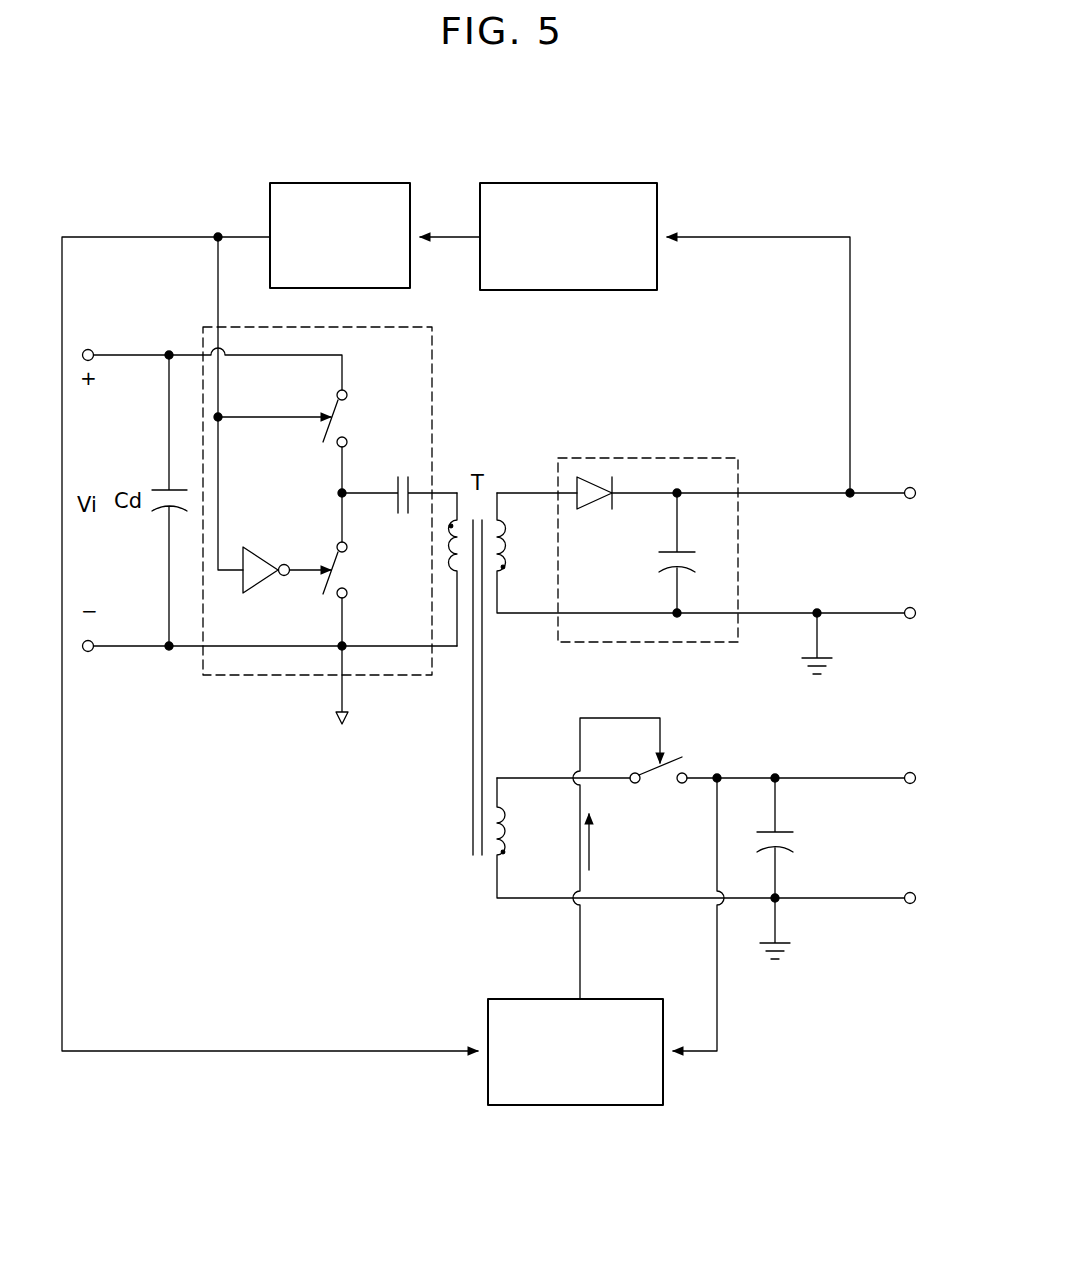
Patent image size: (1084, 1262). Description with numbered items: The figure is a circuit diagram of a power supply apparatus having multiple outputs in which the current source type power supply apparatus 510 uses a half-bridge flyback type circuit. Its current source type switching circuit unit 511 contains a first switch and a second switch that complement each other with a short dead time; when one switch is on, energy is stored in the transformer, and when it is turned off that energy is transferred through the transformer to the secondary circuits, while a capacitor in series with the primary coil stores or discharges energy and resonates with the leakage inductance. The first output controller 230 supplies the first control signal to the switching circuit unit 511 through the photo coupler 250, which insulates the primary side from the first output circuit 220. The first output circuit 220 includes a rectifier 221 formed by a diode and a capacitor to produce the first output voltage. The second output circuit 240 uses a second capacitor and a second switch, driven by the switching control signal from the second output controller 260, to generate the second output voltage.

The photo coupler 250 is at (347, 182).
The first output controller 230 is at (573, 183).
The current source type power supply apparatus 510 is at (188, 343).
The current source type switching circuit unit 511 is at (243, 675).
The first output circuit 220 is at (522, 445).
The rectifier 221 is at (650, 458).
The second output circuit 240 is at (513, 920).
The second output controller 260 is at (600, 999).